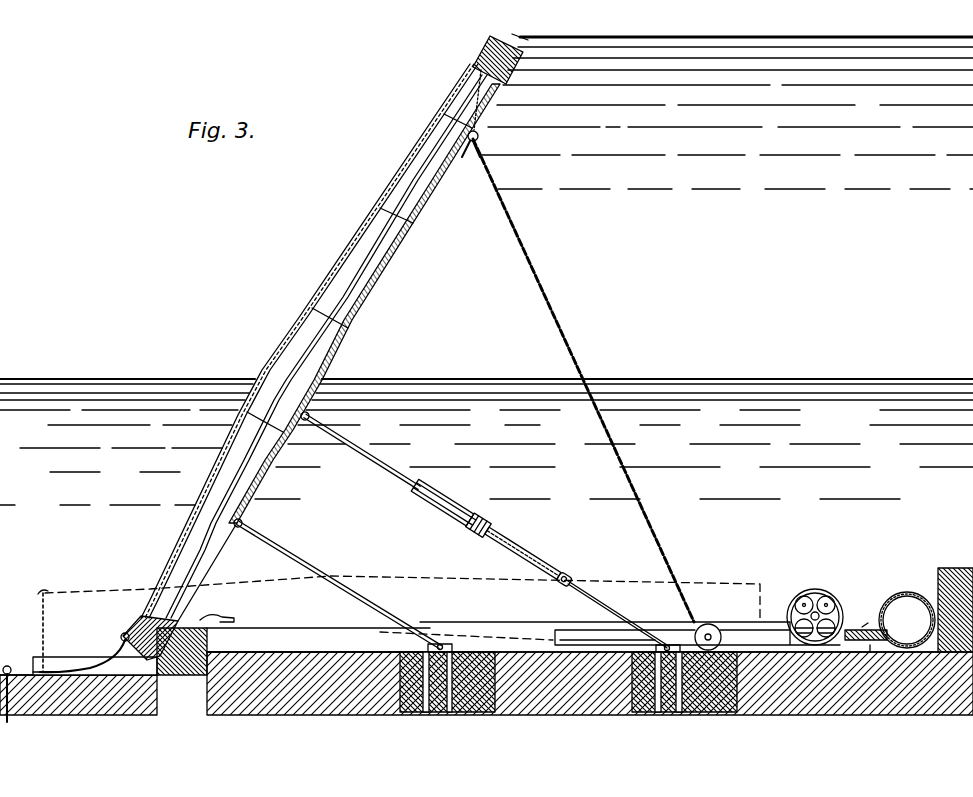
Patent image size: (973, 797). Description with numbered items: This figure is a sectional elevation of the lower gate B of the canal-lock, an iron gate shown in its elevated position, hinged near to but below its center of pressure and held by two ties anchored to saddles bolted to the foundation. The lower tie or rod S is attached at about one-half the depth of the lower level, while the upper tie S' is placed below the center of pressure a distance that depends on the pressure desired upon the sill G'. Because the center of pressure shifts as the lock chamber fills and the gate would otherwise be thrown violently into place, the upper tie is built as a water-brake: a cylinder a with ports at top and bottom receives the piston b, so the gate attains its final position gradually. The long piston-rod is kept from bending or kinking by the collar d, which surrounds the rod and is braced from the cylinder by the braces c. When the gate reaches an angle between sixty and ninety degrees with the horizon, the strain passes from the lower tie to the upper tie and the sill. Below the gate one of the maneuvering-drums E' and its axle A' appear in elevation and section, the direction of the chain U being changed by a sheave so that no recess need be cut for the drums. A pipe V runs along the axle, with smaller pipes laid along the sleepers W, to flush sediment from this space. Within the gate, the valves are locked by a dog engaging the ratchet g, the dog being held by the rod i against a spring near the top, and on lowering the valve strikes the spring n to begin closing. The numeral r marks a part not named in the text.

The lower gate B is at (322, 348).
The rod i is at (326, 346).
The mutilated ratchet g is at (495, 86).
The chain U is at (583, 380).
The rod S is at (485, 519).
The piston b is at (370, 440).
The collar d is at (451, 494).
The braces c is at (467, 515).
The cylinder a is at (534, 546).
The tie or rod S' is at (342, 584).
The sill G' is at (293, 651).
The spring n is at (217, 613).
The sleepers W is at (630, 622).
The maneuvering-drum E' is at (817, 611).
The axle A' is at (865, 621).
The roller r is at (866, 635).
The pipe V is at (907, 620).